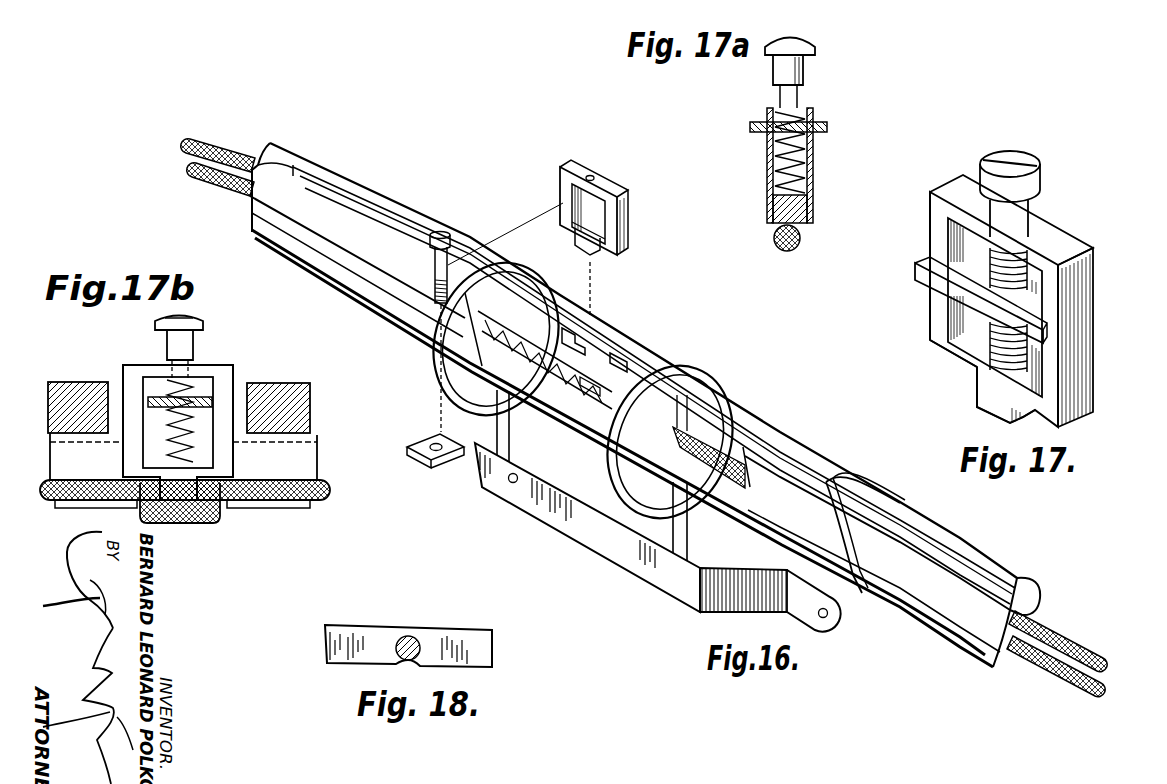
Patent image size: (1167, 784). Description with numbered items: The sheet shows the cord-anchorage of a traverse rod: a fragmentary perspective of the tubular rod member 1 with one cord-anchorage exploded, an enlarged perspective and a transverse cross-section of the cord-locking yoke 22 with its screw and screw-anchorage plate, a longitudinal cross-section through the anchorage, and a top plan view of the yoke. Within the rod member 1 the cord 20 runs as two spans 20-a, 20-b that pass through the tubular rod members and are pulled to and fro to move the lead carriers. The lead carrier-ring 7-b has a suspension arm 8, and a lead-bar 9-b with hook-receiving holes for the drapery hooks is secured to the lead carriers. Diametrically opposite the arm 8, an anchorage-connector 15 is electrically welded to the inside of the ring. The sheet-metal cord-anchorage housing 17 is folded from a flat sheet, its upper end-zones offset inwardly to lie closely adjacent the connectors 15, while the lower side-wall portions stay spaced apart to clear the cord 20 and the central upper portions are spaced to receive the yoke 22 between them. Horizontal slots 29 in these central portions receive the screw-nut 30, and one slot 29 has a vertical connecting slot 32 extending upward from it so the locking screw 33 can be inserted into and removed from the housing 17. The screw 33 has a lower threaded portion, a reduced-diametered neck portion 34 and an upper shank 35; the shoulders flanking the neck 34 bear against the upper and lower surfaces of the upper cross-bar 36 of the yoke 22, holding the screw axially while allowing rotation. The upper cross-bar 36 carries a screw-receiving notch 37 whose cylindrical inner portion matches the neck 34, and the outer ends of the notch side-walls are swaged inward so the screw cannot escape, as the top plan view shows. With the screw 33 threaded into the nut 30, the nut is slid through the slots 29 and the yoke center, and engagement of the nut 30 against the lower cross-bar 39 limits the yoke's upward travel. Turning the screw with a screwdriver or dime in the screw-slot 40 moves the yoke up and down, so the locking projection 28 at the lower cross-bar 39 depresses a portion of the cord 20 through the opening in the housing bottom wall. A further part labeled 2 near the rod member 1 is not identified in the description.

In FIG. 16, the tubular rod member 1 is at (948, 538).
In FIG. 16, the strap bracket 2 is at (841, 481).
In FIG. 16, the lead carrier-ring 7-b is at (708, 380).
In FIG. 16, the suspension member or arm 8 is at (497, 425).
In FIG. 16, the lead-bar 9-b is at (660, 584).
In FIG. 17B, the anchorage-connector 15 is at (293, 388).
In FIG. 16, the cord-anchorage housing 17 is at (583, 380).
In FIG. 17B, the cord 20 is at (327, 492).
In FIG. 16, the cord span 20-a is at (1047, 660).
In FIG. 16, the cord span 20-b is at (1067, 648).
In FIG. 16, the cord-locking yoke 22 is at (610, 218).
In FIG. 17, the cord-locking yoke 22 is at (1013, 302).
In FIG. 17B, the cord-locking yoke 22 is at (208, 422).
In FIG. 18, the cord-locking yoke 22 is at (451, 628).
In FIG. 16, the locking projection 28 is at (592, 258).
In FIG. 17, the locking projection 28 is at (977, 410).
In FIG. 17A, the locking projection 28 is at (815, 213).
In FIG. 17B, the locking projection 28 is at (193, 521).
In FIG. 16, the horizontal slot 29 is at (618, 357).
In FIG. 16, the screw-nut 30 is at (423, 451).
In FIG. 17, the screw-nut 30 is at (953, 278).
In FIG. 17A, the screw-nut 30 is at (753, 127).
In FIG. 17B, the screw-nut 30 is at (153, 397).
In FIG. 16, the vertical connecting slot 32 is at (588, 348).
In FIG. 16, the locking screw 33 is at (432, 305).
In FIG. 17, the locking screw 33 is at (1008, 310).
In FIG. 17A, the locking screw 33 is at (772, 163).
In FIG. 17B, the locking screw 33 is at (170, 448).
In FIG. 16, the reduced-diametered shank portion 34 is at (419, 312).
In FIG. 17A, the reduced-diametered shank portion 34 is at (787, 97).
In FIG. 18, the reduced-diametered shank portion 34 is at (410, 637).
In FIG. 17, the upper shank 35 is at (1017, 207).
In FIG. 17A, the upper shank 35 is at (802, 70).
In FIG. 17B, the upper shank 35 is at (183, 342).
In FIG. 17, the upper cross-bar 36 is at (1070, 247).
In FIG. 17B, the upper cross-bar 36 is at (222, 367).
In FIG. 18, the upper cross-bar 36 is at (480, 630).
In FIG. 16, the screw-receiving notch 37 is at (594, 181).
In FIG. 17A, the screw-receiving notch 37 is at (807, 98).
In FIG. 18, the screw-receiving notch 37 is at (418, 638).
In FIG. 16, the lower cross-bar 39 is at (580, 235).
In FIG. 17, the lower cross-bar 39 is at (947, 358).
In FIG. 17B, the lower cross-bar 39 is at (237, 507).
In FIG. 16, the screw-slot 40 is at (438, 233).